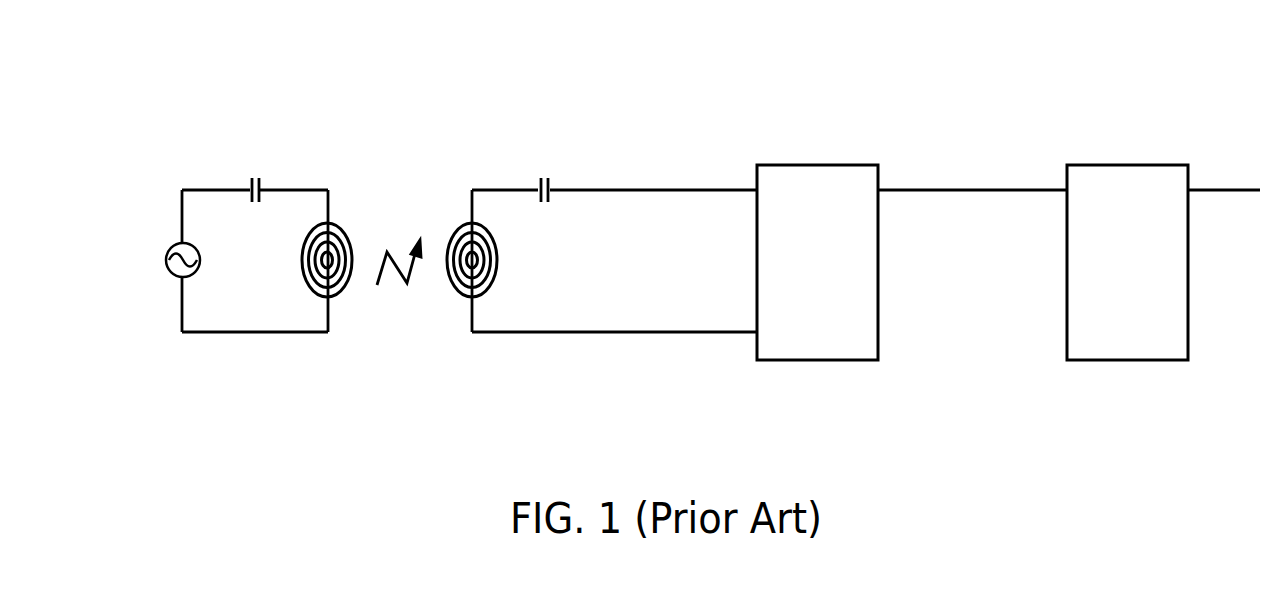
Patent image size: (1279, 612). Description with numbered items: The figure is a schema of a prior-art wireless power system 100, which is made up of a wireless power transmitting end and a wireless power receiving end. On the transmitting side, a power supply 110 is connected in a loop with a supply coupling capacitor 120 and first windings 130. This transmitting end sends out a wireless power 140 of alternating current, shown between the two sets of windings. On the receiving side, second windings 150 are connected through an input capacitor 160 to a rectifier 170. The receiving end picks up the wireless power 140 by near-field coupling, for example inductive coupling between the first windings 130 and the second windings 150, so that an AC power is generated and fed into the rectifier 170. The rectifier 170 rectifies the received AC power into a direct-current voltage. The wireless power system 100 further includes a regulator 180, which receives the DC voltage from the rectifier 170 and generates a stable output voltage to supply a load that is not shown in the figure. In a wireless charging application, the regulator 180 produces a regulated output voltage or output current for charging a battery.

The wireless power system 100 is at (160, 70).
The power supply 110 is at (172, 247).
The supply coupling capacitor 120 is at (262, 186).
The first windings 130 is at (338, 300).
The wireless power 140 is at (407, 288).
The second windings 150 is at (458, 298).
The input capacitor 160 is at (537, 183).
The rectifier 170 is at (844, 312).
The regulator 180 is at (1154, 312).